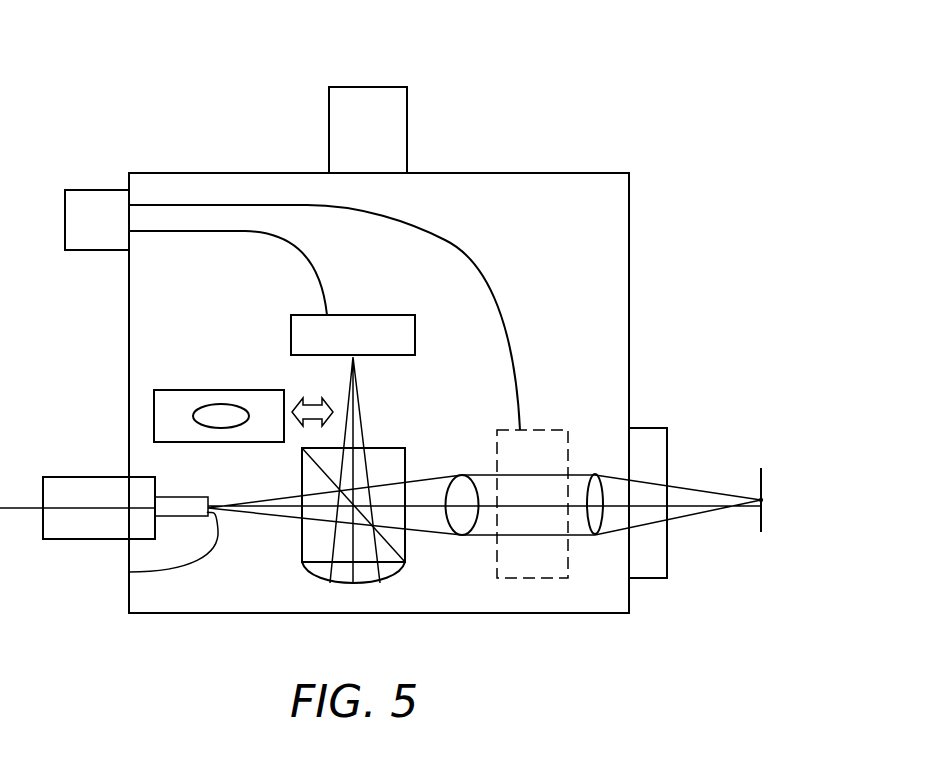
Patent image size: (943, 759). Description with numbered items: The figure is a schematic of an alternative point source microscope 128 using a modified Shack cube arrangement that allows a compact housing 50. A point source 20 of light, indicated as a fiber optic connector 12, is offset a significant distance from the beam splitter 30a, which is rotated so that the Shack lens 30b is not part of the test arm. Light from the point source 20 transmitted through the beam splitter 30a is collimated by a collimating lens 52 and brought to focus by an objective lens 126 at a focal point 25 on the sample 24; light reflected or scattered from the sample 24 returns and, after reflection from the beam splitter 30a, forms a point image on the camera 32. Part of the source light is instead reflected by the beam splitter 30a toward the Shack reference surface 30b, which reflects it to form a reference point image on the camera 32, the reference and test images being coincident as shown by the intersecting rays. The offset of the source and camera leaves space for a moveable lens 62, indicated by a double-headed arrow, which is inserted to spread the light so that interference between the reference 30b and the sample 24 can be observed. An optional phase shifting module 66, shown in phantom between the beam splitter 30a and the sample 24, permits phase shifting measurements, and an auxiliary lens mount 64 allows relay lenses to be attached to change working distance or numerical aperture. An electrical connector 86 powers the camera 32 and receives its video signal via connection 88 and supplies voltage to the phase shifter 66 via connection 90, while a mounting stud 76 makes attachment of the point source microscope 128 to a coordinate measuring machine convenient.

The fiber optic connector 12 is at (95, 488).
The point source 20 is at (129, 572).
The sample 24 is at (761, 520).
The focal point 25 is at (761, 499).
The beam splitter 30a is at (302, 543).
The Shack lens 30b is at (340, 583).
The camera 32 is at (364, 323).
The compact housing 50 is at (267, 613).
The collimating lens 52 is at (462, 488).
The moveable lens 62 is at (238, 392).
The auxiliary lens mount 64 is at (646, 438).
The phase shifting module 66 is at (548, 438).
The mounting adapter or stud 76 is at (387, 113).
The electrical connector 86 is at (103, 188).
The connection 88 is at (293, 244).
The connection 90 is at (437, 237).
The objective lens 126 is at (595, 535).
The point source microscope 128 is at (172, 637).